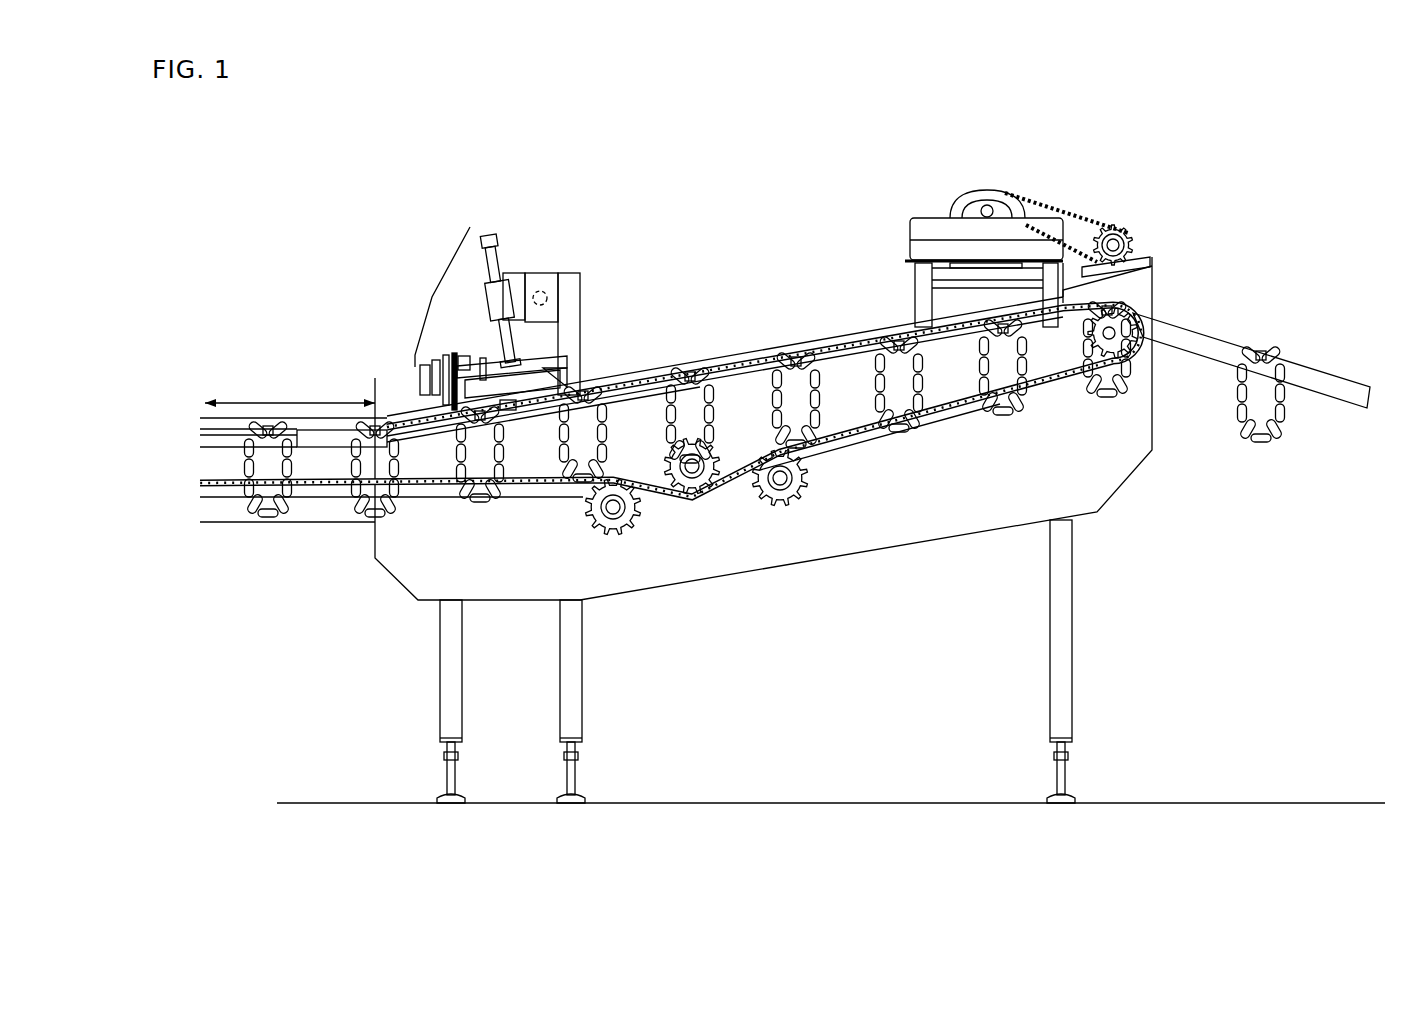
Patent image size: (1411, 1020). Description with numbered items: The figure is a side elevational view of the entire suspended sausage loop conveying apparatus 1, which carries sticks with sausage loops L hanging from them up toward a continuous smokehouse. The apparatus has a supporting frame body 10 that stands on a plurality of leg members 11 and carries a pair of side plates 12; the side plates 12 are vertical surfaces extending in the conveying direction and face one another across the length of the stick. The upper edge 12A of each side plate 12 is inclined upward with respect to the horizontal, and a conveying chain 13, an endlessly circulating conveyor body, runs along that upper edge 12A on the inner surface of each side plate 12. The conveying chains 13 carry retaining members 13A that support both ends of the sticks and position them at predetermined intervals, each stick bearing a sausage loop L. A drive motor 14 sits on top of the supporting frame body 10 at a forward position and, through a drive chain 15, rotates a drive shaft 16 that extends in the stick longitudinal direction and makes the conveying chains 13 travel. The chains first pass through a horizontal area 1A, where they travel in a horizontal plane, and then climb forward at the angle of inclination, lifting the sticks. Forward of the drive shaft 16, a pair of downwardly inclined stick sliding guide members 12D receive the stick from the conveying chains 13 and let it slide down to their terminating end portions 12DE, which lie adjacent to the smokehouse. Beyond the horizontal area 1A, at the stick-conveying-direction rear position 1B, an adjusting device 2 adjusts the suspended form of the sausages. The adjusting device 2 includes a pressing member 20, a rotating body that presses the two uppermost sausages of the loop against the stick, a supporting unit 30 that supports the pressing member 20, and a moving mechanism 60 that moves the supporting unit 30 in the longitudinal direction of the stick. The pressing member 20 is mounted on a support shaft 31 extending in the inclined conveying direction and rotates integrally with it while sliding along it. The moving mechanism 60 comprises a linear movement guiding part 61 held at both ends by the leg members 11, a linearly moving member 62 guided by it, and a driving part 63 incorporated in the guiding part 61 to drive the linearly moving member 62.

The suspended sausage loop conveying apparatus 1 is at (790, 230).
The horizontal area 1A is at (328, 402).
The stick-conveying-direction rear position 1B is at (457, 214).
The adjusting device 2 is at (428, 248).
The supporting frame body 10 is at (748, 575).
The leg members 11 is at (573, 650).
The side plates 12 is at (897, 530).
The upper edge 12A is at (640, 375).
The stick sliding guide members 12D is at (1285, 377).
The terminating end portions 12DE is at (1370, 391).
The conveying chain 13 is at (882, 332).
The retaining members 13A is at (787, 353).
The drive motor 14 is at (950, 212).
The drive chain 15 is at (1065, 205).
The drive shaft 16 is at (1133, 313).
The pressing member 20 is at (510, 412).
The supporting unit 30 is at (441, 295).
The support shaft 31 is at (567, 360).
The moving mechanism 60 is at (630, 188).
The linear movement guiding part 61 is at (545, 280).
The linearly moving member 62 is at (522, 280).
The driving part 63 is at (550, 293).
The sausage loop L is at (812, 408).